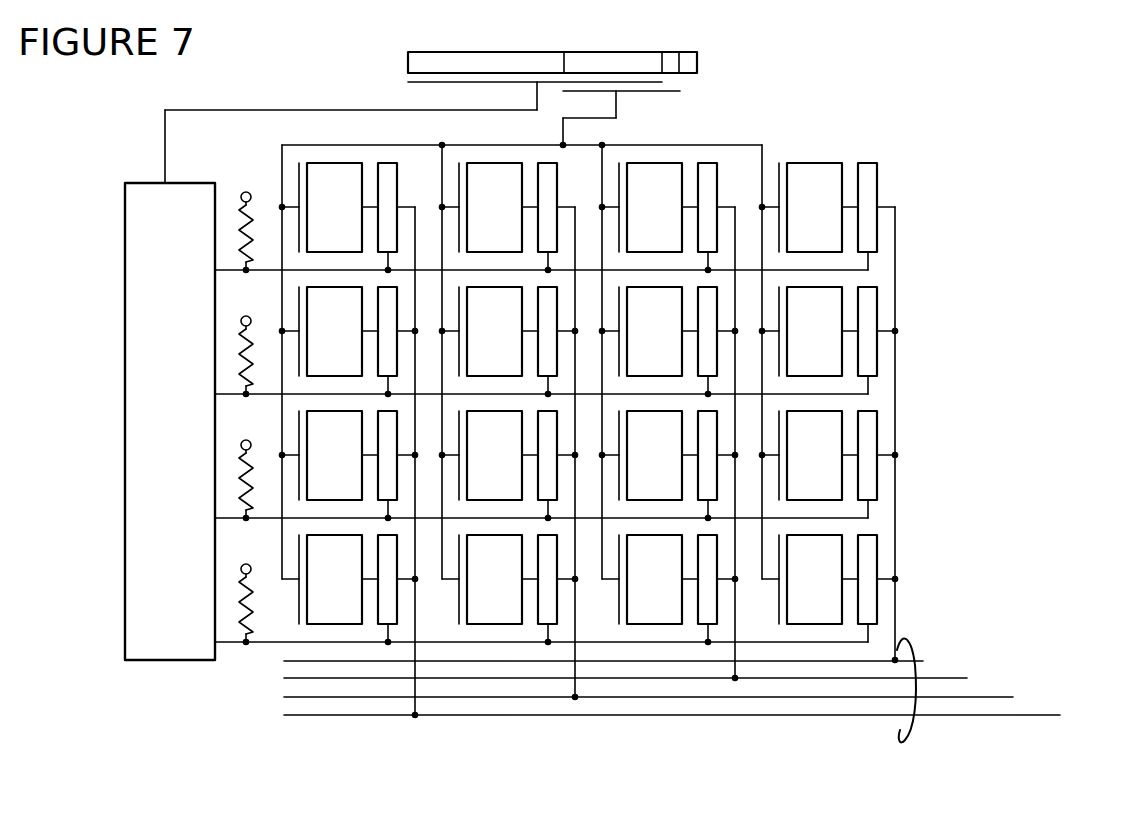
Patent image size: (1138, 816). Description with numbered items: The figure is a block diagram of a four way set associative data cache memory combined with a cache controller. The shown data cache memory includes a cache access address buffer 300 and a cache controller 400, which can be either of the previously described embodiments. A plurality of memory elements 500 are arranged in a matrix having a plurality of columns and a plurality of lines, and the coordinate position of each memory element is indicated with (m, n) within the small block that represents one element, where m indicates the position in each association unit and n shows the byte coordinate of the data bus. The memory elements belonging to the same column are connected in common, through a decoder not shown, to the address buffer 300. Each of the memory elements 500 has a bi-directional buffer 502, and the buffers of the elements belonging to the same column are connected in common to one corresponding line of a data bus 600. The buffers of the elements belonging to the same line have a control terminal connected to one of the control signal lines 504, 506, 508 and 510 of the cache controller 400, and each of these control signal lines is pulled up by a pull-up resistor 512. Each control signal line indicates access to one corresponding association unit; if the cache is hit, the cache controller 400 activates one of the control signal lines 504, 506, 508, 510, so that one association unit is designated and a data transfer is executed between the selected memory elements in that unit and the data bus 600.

The cache access address buffer 300 is at (408, 57).
The cache controller 400 is at (125, 215).
The memory elements 500 is at (334, 163).
The bi-directional buffer 502 is at (397, 186).
The control signal line 504 is at (868, 268).
The control signal line 506 is at (868, 392).
The control signal line 508 is at (868, 515).
The control signal line 510 is at (868, 640).
The pull-up resistor 512 is at (243, 228).
The data bus 600 is at (916, 718).